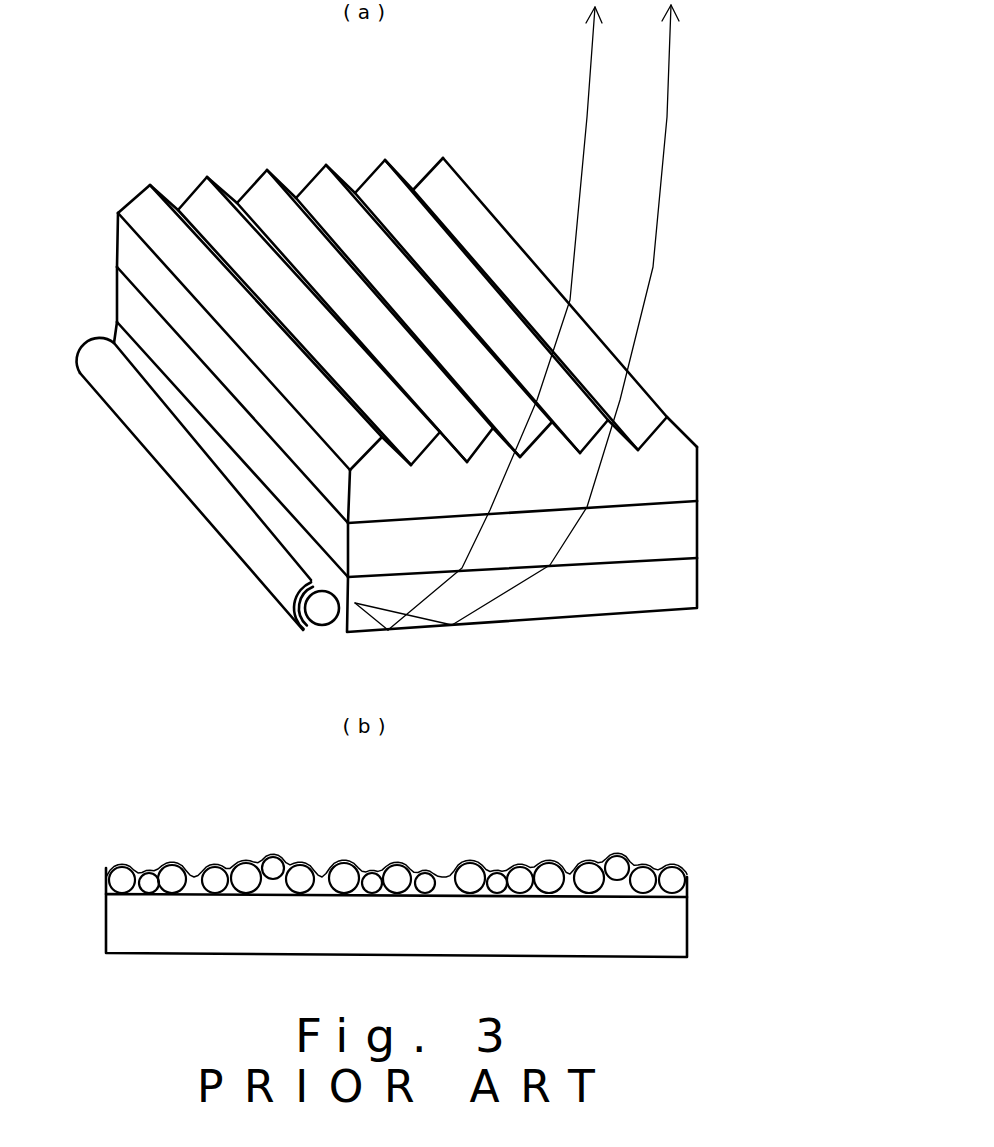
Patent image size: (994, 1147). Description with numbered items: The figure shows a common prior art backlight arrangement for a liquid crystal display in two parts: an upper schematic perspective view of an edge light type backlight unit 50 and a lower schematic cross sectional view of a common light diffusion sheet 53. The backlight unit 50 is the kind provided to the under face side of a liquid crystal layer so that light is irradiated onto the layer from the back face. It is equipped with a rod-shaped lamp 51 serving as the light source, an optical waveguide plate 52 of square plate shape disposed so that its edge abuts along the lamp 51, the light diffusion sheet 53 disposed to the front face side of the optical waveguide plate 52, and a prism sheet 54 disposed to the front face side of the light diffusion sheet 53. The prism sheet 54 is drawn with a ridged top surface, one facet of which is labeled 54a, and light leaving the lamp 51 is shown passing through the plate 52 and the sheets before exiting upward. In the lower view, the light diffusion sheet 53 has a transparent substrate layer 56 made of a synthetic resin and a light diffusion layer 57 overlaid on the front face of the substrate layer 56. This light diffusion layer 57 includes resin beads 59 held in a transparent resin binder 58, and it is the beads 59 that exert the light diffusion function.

The backlight unit 50 is at (198, 145).
The rod-shaped lamp 51 is at (322, 608).
The optical waveguide plate 52 is at (677, 593).
The light diffusion sheet 53 is at (677, 538).
The prism sheet 54 is at (678, 478).
The prism surface 54a is at (445, 200).
The transparent substrate layer 56 is at (688, 930).
The light diffusion layer 57 is at (688, 882).
The transparent resin binder 58 is at (442, 876).
The resin beads 59 is at (344, 876).